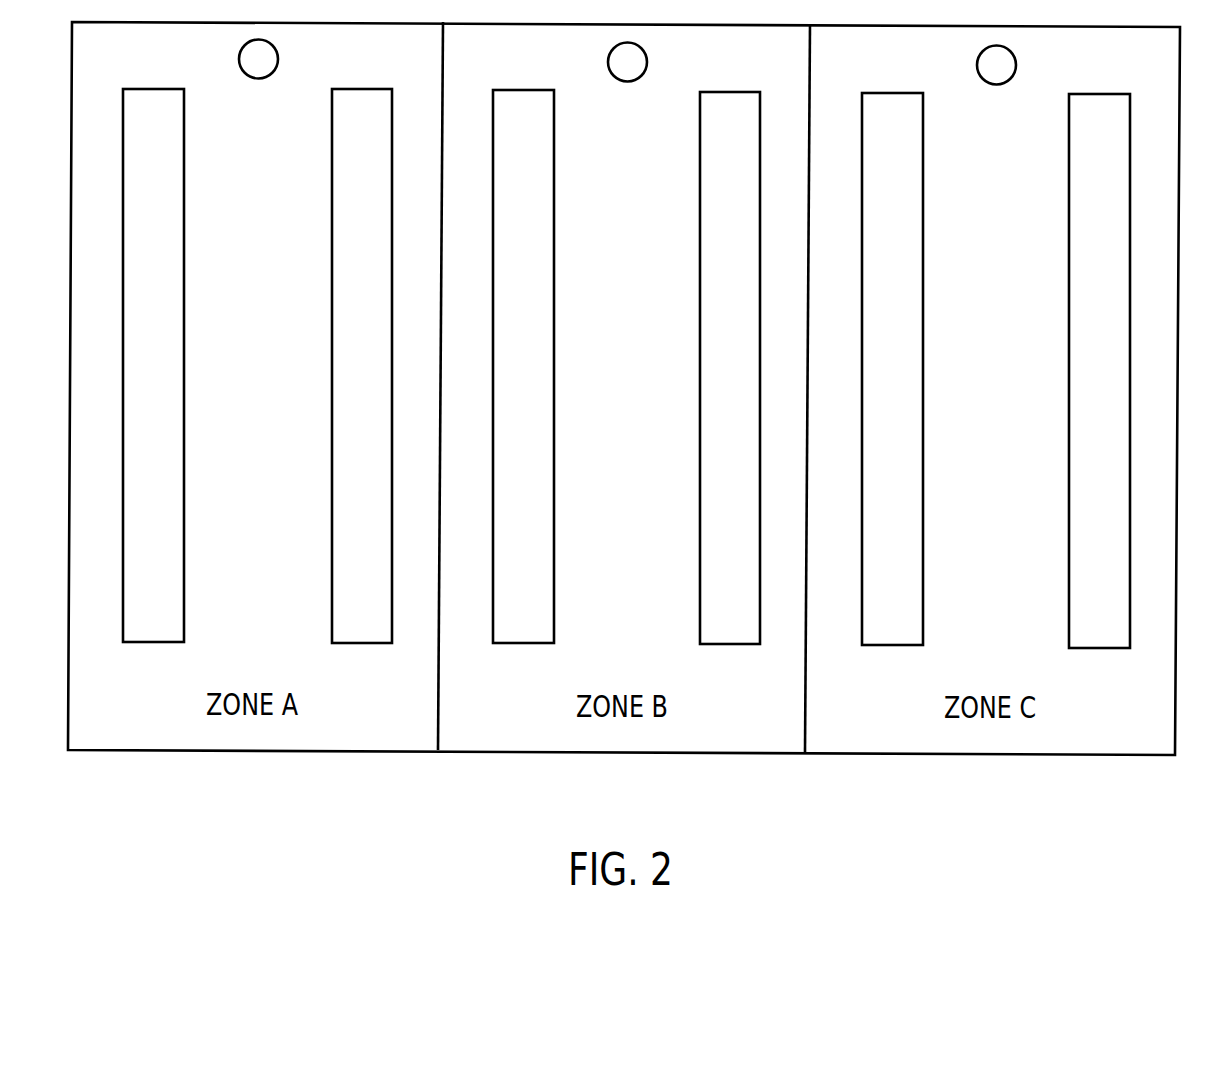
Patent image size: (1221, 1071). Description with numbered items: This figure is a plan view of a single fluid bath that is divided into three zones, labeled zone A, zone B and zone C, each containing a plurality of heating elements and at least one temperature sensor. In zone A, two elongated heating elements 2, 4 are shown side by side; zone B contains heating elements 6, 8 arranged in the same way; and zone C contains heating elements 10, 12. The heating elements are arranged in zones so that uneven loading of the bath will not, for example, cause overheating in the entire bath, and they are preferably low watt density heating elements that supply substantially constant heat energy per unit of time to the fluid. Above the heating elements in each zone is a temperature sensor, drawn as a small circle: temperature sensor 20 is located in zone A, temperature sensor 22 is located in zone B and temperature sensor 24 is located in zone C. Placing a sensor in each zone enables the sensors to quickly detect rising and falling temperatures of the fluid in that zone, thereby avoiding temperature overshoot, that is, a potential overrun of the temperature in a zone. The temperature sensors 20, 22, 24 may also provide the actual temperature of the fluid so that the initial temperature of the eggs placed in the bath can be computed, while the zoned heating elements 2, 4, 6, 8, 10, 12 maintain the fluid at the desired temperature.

The heating element 2 is at (184, 226).
The heating element 4 is at (332, 226).
The heating element 6 is at (554, 227).
The heating element 8 is at (700, 227).
The heating element 10 is at (923, 229).
The heating element 12 is at (1069, 229).
The temperature sensor 20 is at (278, 60).
The temperature sensor 22 is at (647, 63).
The temperature sensor 24 is at (1016, 66).